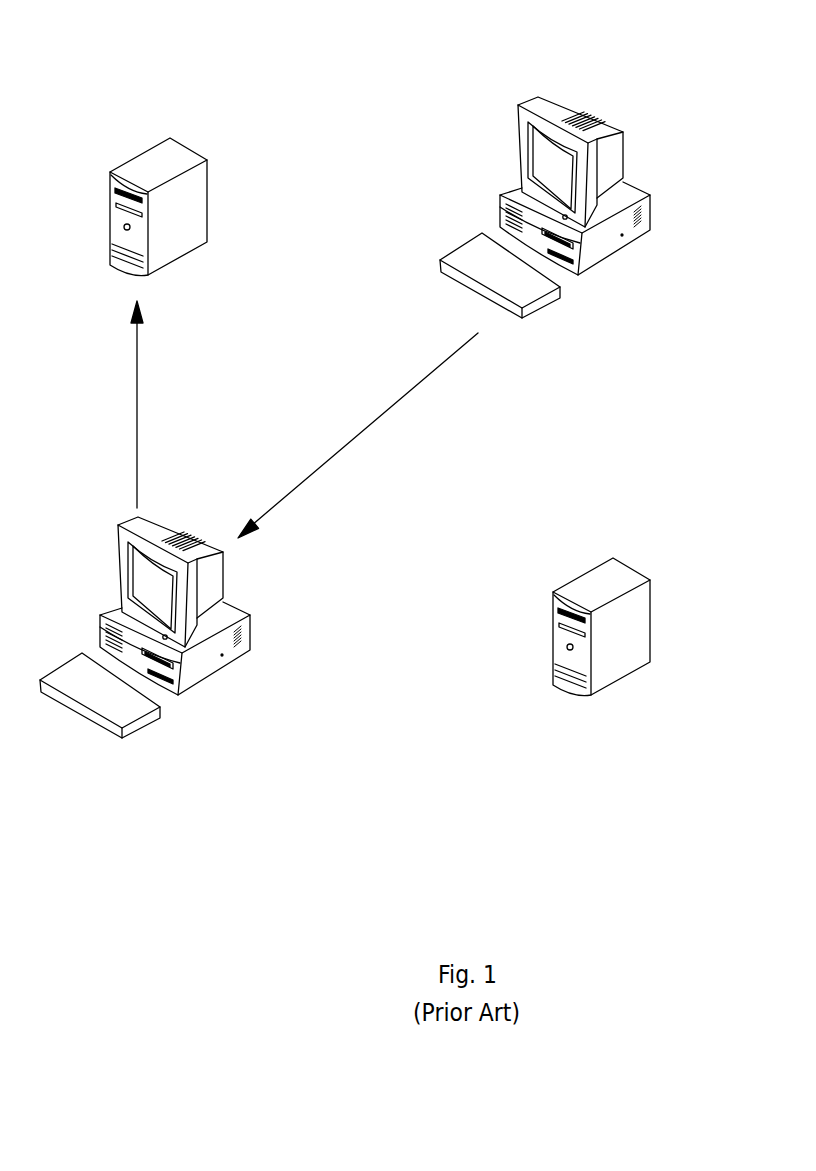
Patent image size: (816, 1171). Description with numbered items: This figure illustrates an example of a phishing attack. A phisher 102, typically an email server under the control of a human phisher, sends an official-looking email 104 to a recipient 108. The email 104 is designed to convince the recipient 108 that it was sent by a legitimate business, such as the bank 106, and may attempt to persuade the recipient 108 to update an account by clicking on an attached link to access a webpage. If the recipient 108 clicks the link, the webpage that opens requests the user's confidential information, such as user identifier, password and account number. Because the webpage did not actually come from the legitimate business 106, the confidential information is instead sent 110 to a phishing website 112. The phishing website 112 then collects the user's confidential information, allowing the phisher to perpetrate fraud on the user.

The phisher 102 is at (558, 105).
The email 104 is at (377, 422).
The bank 106 is at (586, 572).
The recipient 108 is at (180, 522).
The sending of confidential information 110 is at (138, 372).
The phishing website 112 is at (140, 152).